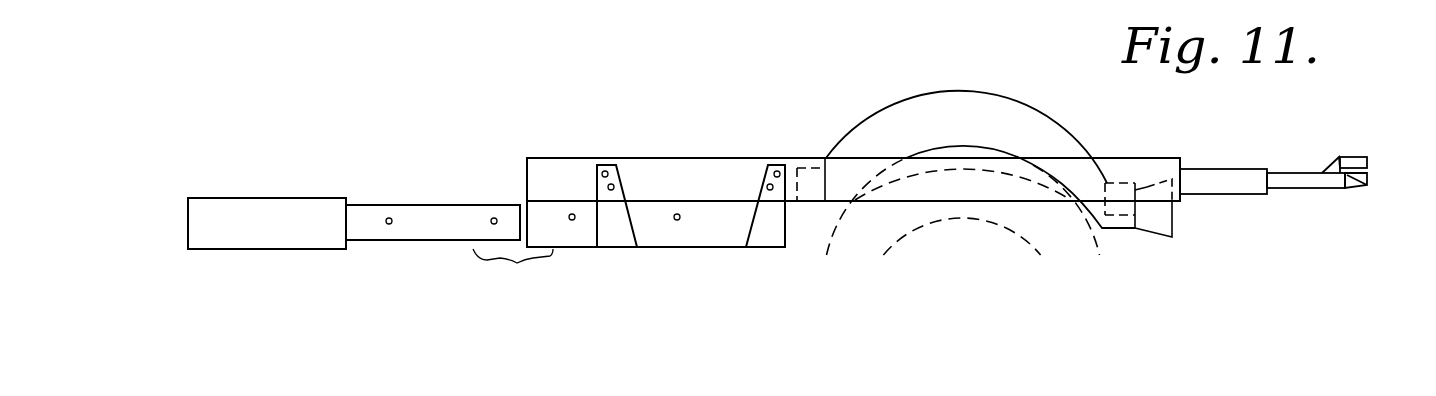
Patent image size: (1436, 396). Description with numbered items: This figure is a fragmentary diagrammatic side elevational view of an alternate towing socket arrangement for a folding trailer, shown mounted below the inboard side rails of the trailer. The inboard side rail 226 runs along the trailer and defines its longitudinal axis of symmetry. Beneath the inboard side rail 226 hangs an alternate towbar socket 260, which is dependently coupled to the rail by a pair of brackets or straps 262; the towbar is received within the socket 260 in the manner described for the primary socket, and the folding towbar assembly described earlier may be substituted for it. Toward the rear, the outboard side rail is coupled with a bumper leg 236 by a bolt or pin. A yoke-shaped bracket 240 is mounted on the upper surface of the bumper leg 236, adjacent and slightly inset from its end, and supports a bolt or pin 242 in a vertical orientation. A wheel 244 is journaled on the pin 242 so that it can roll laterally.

The inboard side rail 226 is at (707, 180).
The alternate towbar socket 260 is at (578, 238).
The bracket or strap 262 is at (622, 233).
The bumper leg 236 is at (1297, 187).
The yoke-shaped bracket 240 is at (1328, 170).
The bolt or pin 242 is at (1363, 157).
The wheel 244 is at (1362, 188).